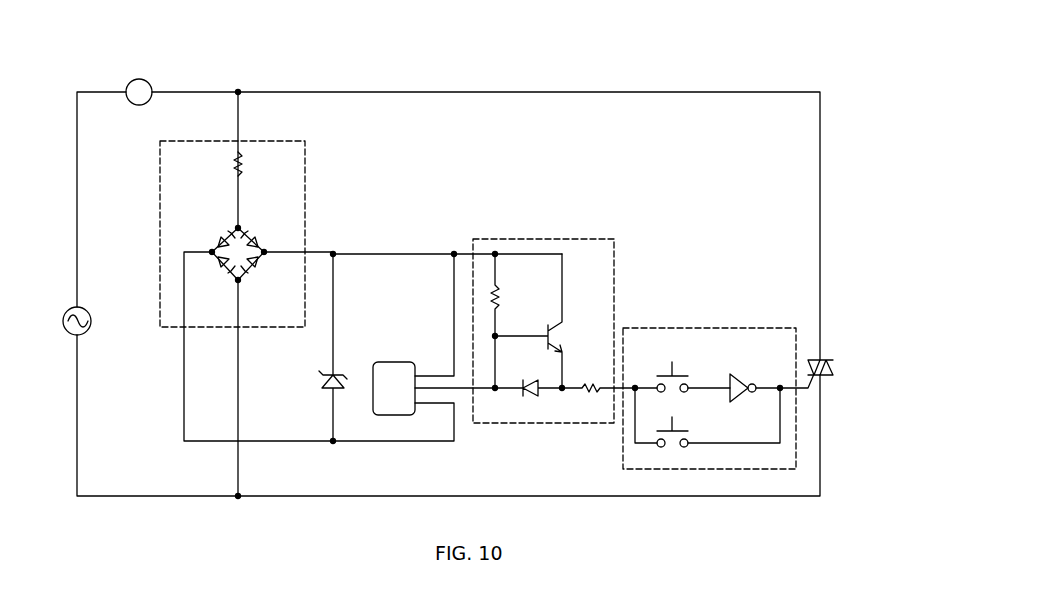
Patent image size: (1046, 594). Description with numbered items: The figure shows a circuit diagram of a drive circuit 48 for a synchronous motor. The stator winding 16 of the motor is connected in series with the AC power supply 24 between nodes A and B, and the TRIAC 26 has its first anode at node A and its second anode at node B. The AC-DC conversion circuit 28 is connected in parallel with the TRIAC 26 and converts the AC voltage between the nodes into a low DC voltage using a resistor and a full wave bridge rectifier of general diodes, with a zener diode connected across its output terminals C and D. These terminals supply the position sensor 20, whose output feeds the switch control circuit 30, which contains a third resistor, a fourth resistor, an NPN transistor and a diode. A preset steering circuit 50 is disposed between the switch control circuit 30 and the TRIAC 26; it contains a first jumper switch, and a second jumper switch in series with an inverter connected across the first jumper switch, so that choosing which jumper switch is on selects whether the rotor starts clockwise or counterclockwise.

The drive circuit 48 is at (745, 78).
The stator winding 16 is at (133, 106).
The AC power supply 24 is at (86, 309).
The AC-DC conversion circuit 28 is at (305, 165).
The position sensor 20 is at (392, 361).
The switch control circuit 30 is at (583, 238).
The preset steering circuit 50 is at (714, 326).
The TRIAC 26 is at (838, 364).